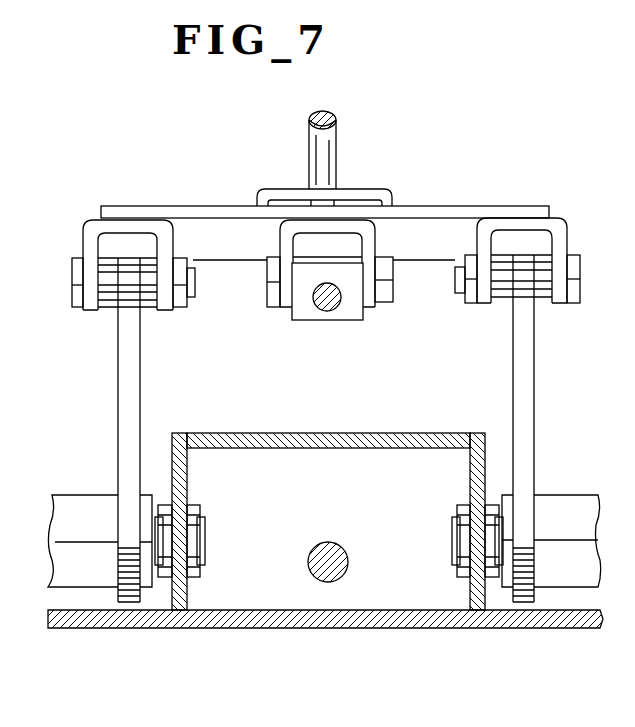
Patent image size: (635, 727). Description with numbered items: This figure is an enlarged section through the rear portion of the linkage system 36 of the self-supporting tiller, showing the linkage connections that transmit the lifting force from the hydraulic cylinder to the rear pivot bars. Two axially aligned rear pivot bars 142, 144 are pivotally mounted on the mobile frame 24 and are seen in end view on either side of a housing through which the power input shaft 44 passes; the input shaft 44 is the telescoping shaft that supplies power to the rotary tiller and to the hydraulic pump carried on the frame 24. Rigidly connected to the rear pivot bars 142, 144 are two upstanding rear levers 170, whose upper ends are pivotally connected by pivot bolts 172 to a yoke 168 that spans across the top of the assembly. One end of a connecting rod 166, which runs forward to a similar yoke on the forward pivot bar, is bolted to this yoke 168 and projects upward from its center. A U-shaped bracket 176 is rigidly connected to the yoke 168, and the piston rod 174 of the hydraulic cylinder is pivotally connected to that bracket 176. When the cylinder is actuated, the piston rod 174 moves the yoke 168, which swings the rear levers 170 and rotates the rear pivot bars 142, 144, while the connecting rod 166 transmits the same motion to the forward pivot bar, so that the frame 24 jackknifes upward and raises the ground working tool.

The mobile frame 24 is at (330, 626).
The linkage system 36 is at (452, 202).
The power input shaft 44 is at (329, 550).
The rear pivot bar 142 is at (77, 497).
The rear pivot bar 144 is at (552, 497).
The connecting rod 166 is at (338, 153).
The yoke 168 is at (200, 205).
The rear levers 170 is at (124, 361).
The pivot bolts 172 is at (77, 307).
The piston rod 174 is at (331, 311).
The U-shaped bracket 176 is at (285, 308).